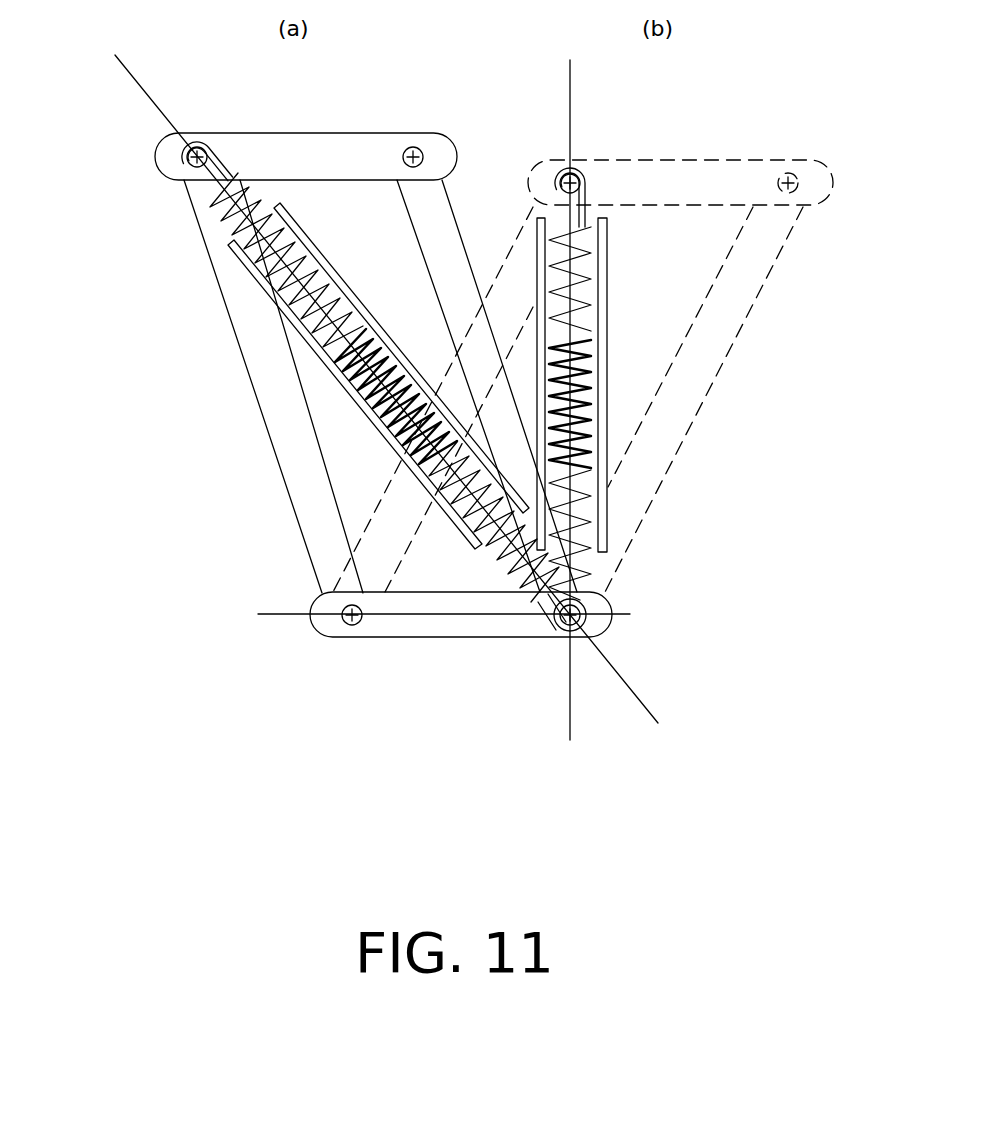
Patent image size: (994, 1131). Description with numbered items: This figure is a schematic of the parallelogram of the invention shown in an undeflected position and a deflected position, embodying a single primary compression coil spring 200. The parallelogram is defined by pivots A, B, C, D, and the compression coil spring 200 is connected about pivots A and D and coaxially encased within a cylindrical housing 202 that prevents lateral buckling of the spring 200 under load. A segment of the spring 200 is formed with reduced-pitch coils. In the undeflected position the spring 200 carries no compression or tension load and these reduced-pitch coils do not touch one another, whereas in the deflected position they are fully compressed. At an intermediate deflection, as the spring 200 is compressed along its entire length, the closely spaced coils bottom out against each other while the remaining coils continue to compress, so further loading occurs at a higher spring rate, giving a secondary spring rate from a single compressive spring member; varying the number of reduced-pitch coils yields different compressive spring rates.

The compression coil spring 200 is at (230, 212).
The cylindrical housing 202 is at (298, 323).
The pivot A is at (183, 156).
The pivot B is at (417, 148).
The pivot C is at (352, 625).
The pivot D is at (590, 636).